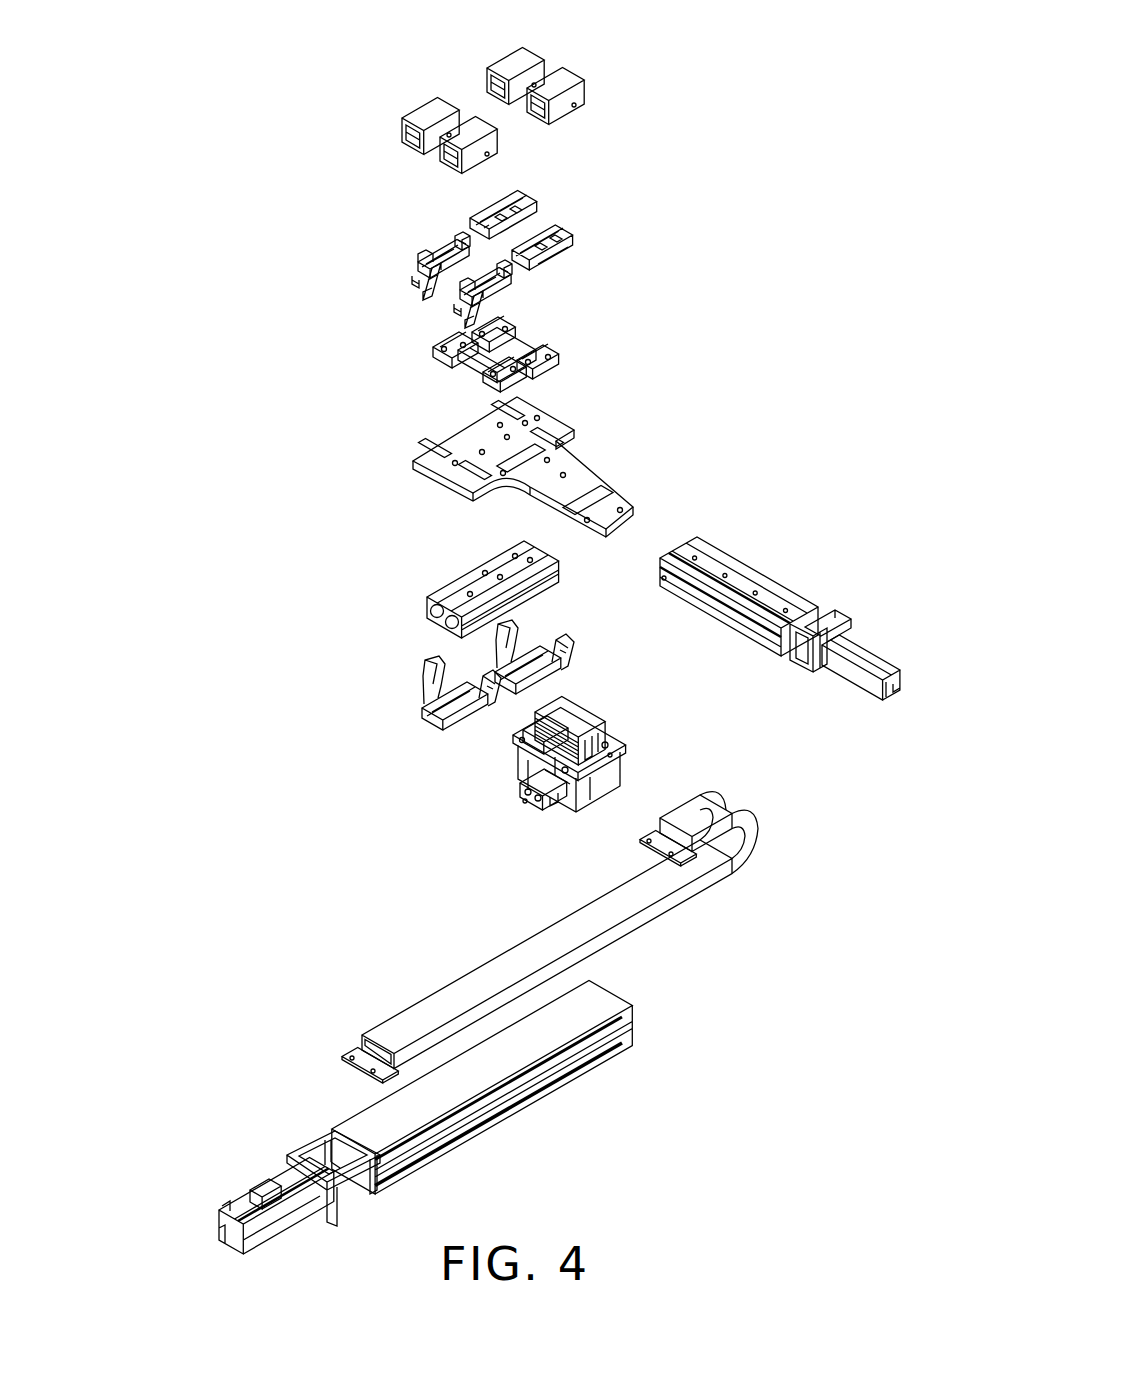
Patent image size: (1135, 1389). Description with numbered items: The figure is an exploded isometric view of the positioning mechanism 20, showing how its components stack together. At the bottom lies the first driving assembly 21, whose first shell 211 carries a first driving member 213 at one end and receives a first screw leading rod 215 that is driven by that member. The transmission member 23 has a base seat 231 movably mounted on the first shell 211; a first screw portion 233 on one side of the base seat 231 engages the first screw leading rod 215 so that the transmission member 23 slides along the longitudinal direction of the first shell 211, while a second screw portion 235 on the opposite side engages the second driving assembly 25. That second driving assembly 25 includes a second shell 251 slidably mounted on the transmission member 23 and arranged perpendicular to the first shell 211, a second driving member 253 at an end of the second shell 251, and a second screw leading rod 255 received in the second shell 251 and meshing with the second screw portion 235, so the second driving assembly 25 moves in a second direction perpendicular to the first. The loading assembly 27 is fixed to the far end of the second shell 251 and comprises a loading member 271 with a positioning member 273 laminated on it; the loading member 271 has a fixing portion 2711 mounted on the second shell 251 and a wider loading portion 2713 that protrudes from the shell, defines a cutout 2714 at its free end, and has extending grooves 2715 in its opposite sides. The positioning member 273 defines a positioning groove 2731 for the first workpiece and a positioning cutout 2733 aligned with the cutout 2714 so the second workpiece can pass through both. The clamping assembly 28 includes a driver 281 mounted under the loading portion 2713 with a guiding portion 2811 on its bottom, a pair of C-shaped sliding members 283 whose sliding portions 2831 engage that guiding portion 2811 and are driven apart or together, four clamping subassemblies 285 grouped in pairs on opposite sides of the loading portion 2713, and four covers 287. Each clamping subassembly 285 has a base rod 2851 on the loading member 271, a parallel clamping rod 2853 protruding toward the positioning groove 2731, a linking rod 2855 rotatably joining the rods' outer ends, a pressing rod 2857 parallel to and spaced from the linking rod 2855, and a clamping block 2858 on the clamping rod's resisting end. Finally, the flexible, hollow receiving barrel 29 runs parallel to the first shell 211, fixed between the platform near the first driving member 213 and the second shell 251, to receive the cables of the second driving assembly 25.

The positioning mechanism 20 is at (363, 81).
The first driving assembly 21 is at (645, 994).
The first shell 211 is at (377, 1118).
The first driving member 213 is at (285, 1222).
The first screw leading rod 215 is at (328, 1140).
The transmission member 23 is at (592, 814).
The base seat 231 is at (613, 763).
The first screw portion 233 is at (537, 793).
The second screw portion 235 is at (602, 732).
The second driving assembly 25 is at (876, 627).
The second shell 251 is at (773, 587).
The second driving member 253 is at (860, 677).
The second screw leading rod 255 is at (797, 657).
The loading assembly 27 is at (713, 332).
The loading member 271 is at (606, 419).
The fixing portion 2711 is at (617, 500).
The loading portion 2713 is at (512, 423).
The cutout 2714 is at (462, 437).
The extending grooves 2715 is at (440, 473).
The positioning member 273 is at (582, 361).
The positioning groove 2731 is at (502, 350).
The positioning cutout 2733 is at (445, 322).
The clamping assembly 28 is at (460, 187).
The driver 281 is at (448, 590).
The guiding portion 2811 is at (447, 625).
The sliding members 283 is at (563, 662).
The sliding portion 2831 is at (533, 650).
The clamping subassemblies 285 is at (318, 190).
The base rod 2851 is at (425, 272).
The clamping rod 2853 is at (447, 240).
The linking rod 2855 is at (430, 252).
The pressing rod 2857 is at (418, 290).
The clamping block 2858 is at (463, 226).
The covers 287 is at (565, 77).
The receiving barrel 29 is at (543, 953).